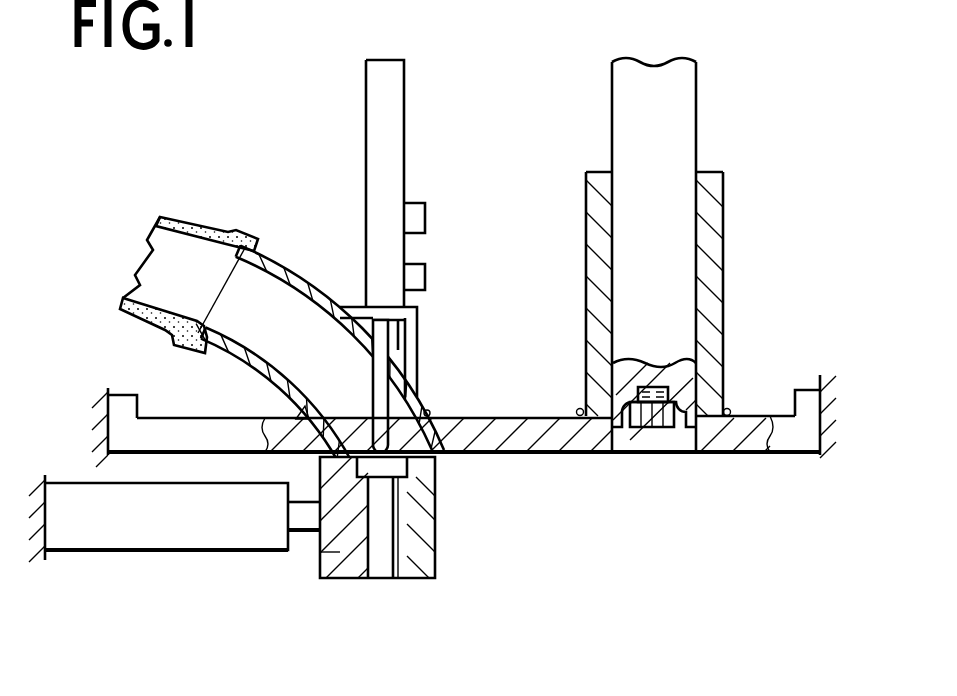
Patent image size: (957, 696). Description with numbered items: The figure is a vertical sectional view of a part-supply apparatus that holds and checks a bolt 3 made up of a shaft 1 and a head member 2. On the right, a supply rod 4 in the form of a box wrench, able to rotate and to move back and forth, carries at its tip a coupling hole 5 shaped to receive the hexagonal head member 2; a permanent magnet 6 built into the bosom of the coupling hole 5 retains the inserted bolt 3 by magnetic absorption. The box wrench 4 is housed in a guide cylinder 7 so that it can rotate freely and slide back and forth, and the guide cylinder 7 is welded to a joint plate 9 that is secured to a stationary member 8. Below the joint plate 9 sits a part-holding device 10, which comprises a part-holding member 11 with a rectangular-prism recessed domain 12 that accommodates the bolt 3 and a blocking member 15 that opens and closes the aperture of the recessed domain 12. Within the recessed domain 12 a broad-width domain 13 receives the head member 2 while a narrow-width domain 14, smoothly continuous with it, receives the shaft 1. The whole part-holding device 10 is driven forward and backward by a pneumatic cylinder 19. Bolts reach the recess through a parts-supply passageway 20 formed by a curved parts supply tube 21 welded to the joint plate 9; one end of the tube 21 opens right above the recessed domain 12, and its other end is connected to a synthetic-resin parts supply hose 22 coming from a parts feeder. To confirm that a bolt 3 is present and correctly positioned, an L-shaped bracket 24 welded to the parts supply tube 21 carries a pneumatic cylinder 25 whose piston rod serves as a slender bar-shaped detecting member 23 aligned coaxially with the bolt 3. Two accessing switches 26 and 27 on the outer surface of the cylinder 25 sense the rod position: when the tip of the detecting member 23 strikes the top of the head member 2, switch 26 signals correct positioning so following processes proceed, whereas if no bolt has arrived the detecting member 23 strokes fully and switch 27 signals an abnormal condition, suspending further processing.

The shaft 1 is at (400, 513).
The head member 2 is at (400, 466).
The bolt 3 is at (381, 580).
The supply rod 4 is at (696, 100).
The coupling hole 5 is at (648, 427).
The permanent magnet 6 is at (655, 388).
The guide cylinder 7 is at (723, 215).
The stationary member 8 is at (808, 400).
The joint plate 9 is at (740, 452).
The part-holding device 10 is at (335, 580).
The part-holding member 11 is at (350, 586).
The recessed domain 12 is at (434, 582).
The broad-width domain 13 is at (356, 468).
The narrow-width domain 14 is at (330, 554).
The blocking member 15 is at (432, 552).
The pneumatic cylinder 19 is at (150, 550).
The parts-supply passageway 20 is at (234, 290).
The parts supply tube 21 is at (330, 262).
The parts supply hose 22 is at (200, 228).
The detecting member 23 is at (430, 412).
The L-shaped bracket 24 is at (417, 330).
The pneumatic cylinder 25 is at (404, 108).
The accessing switch 26 is at (425, 218).
The accessing switch 27 is at (425, 277).